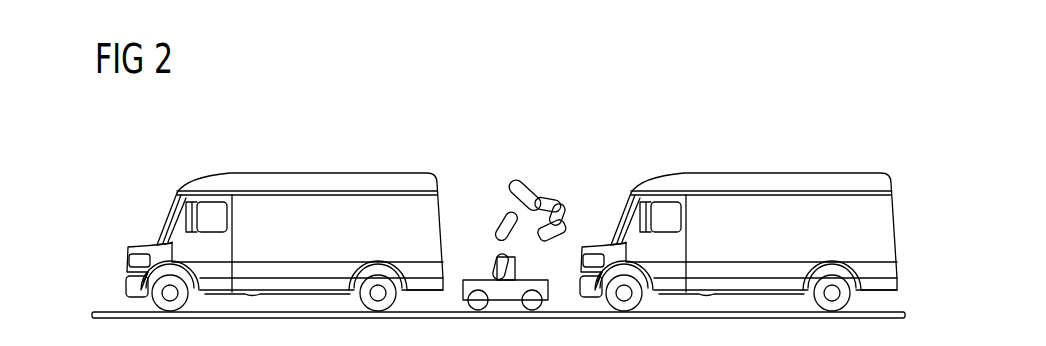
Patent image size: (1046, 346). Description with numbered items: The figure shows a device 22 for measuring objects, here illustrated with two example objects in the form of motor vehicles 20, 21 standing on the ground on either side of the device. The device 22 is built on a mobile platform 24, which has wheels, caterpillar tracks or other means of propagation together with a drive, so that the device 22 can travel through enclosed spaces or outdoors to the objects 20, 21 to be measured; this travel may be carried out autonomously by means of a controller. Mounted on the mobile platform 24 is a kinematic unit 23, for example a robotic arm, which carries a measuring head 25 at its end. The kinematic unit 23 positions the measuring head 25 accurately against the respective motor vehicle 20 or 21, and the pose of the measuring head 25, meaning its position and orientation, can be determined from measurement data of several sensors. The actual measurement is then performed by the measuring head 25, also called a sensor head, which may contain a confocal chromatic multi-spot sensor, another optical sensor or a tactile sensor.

The motor vehicle 20 is at (300, 172).
The motor vehicle 21 is at (772, 172).
The device for measuring objects 22 is at (530, 193).
The kinematic unit 23 is at (499, 232).
The mobile platform 24 is at (482, 280).
The measuring head 25 is at (566, 236).